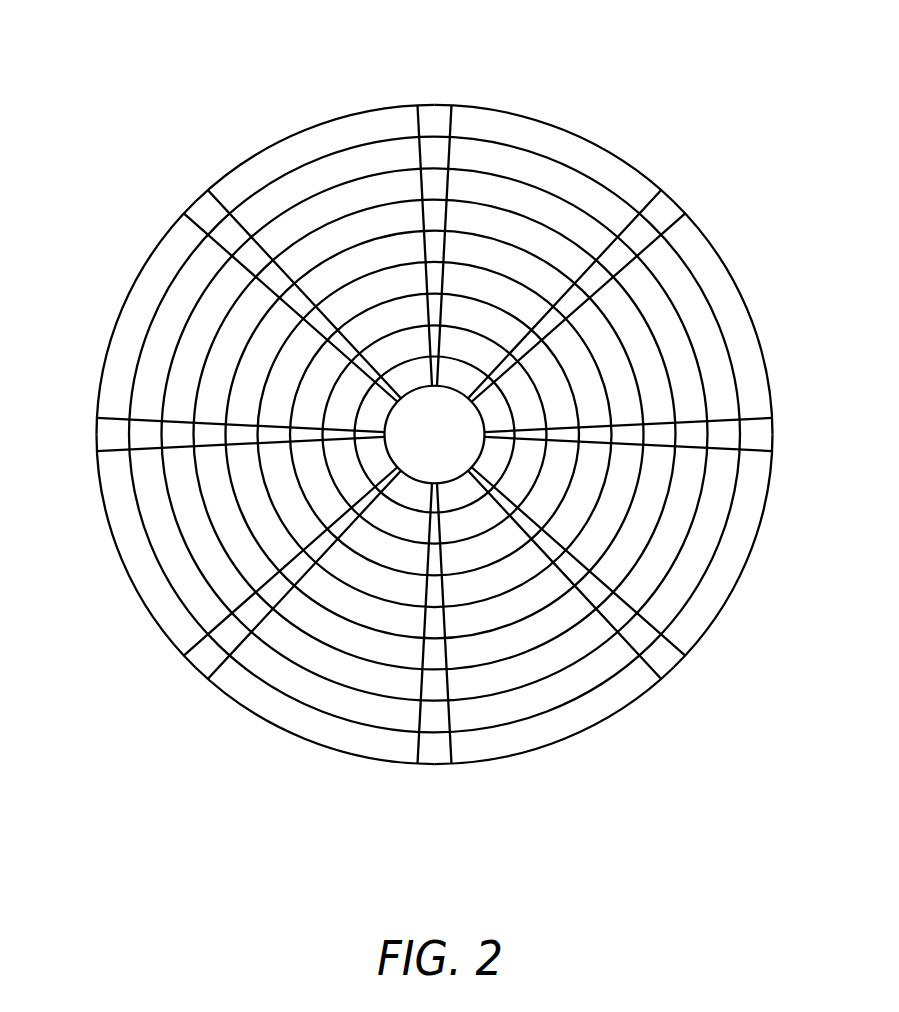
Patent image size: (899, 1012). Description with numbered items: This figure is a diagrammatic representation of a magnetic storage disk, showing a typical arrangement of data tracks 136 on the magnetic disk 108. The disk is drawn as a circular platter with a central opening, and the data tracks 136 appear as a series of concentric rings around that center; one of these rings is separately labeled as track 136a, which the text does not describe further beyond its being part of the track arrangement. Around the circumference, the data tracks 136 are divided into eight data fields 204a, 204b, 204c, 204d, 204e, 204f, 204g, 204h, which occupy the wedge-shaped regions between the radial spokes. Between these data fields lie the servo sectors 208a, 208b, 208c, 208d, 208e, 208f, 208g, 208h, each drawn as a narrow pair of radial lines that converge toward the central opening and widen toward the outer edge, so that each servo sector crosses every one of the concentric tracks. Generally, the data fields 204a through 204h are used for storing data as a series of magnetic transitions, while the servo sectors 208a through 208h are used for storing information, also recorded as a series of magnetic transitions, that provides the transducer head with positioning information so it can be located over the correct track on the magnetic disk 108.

The magnetic disk 108 is at (397, 108).
The data tracks 136 is at (548, 152).
The track / annular zone 136a is at (356, 120).
The data field 204a is at (517, 113).
The data field 204b is at (722, 258).
The data field 204c is at (752, 556).
The data field 204d is at (614, 716).
The data field 204e is at (297, 737).
The data field 204f is at (125, 563).
The data field 204g is at (107, 357).
The data field 204h is at (318, 127).
The servo sector 208a is at (443, 107).
The servo sector 208b is at (677, 211).
The servo sector 208c is at (774, 437).
The servo sector 208d is at (677, 669).
The servo sector 208e is at (437, 764).
The servo sector 208f is at (198, 662).
The servo sector 208g is at (100, 438).
The servo sector 208h is at (193, 200).